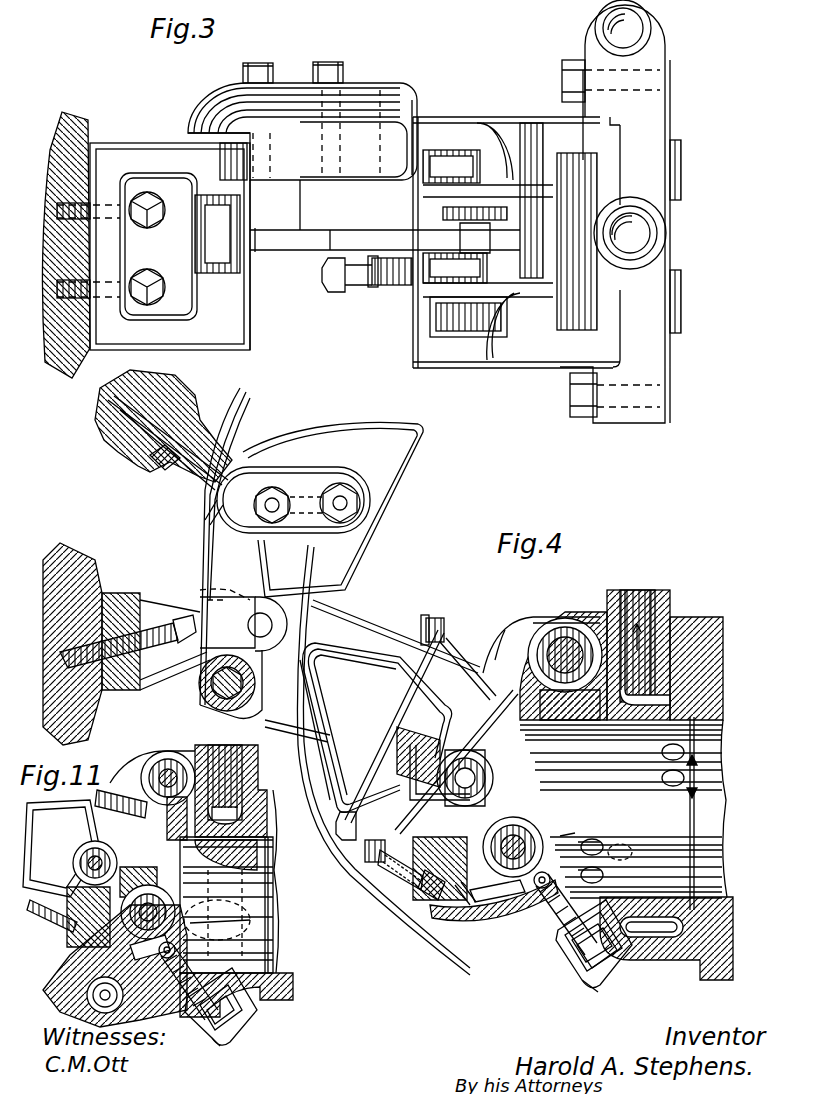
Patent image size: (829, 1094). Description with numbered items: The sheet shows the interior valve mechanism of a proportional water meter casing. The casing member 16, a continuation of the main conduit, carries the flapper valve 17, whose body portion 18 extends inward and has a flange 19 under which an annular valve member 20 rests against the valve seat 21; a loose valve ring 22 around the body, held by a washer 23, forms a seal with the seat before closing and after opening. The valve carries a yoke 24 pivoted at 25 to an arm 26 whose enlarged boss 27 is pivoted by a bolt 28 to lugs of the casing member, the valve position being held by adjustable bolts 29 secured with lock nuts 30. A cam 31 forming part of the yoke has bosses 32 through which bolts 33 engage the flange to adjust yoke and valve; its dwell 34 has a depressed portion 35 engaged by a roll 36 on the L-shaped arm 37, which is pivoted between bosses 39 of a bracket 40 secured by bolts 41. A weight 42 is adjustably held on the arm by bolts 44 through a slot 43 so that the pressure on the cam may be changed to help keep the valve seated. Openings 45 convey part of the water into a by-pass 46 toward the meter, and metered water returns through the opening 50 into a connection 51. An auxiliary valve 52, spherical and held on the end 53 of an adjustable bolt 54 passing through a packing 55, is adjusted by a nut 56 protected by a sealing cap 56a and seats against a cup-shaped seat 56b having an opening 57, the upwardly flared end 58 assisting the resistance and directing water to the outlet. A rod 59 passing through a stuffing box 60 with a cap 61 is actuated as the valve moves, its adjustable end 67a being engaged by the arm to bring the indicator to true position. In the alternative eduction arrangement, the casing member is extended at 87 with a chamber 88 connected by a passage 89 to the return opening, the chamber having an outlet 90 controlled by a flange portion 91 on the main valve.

In FIG. 3, the casing member 16 is at (665, 128).
In FIG. 4, the casing member 16 is at (633, 955).
In FIG. 4, the flapper valve 17 is at (410, 905).
In FIG. 4, the body portion 18 is at (481, 778).
In FIG. 4, the flange 19 is at (430, 905).
In FIG. 4, the annular valve member 20 is at (457, 920).
In FIG. 4, the valve seat 21 is at (450, 905).
In FIG. 4, the valve ring 22 is at (480, 905).
In FIG. 4, the washer or ring 23 is at (560, 757).
In FIG. 3, the yoke 24 is at (435, 362).
In FIG. 4, the yoke 24 is at (425, 735).
In FIG. 4, the pivot 25 is at (400, 762).
In FIG. 4, the arm 26 is at (335, 805).
In FIG. 11, the arm 26 is at (244, 791).
In FIG. 3, the enlarged boss 27 is at (548, 160).
In FIG. 4, the enlarged boss 27 is at (545, 620).
In FIG. 4, the bolt or rod 28 is at (592, 620).
In FIG. 4, the bolts 29 is at (505, 630).
In FIG. 4, the lock nuts 30 is at (462, 650).
In FIG. 4, the cam 31 is at (313, 845).
In FIG. 11, the cam 31 is at (210, 800).
In FIG. 3, the bosses 32 is at (372, 285).
In FIG. 4, the bosses 32 is at (433, 618).
In FIG. 3, the bolts 33 is at (332, 292).
In FIG. 4, the bolts 33 is at (345, 838).
In FIG. 4, the dwell 34 is at (280, 736).
In FIG. 4, the depressed portion 35 is at (292, 625).
In FIG. 3, the roll 36 is at (272, 270).
In FIG. 4, the roll 36 is at (212, 560).
In FIG. 3, the pivotally held arm 37 is at (298, 195).
In FIG. 4, the pivotally held arm 37 is at (225, 590).
In FIG. 3, the lugs or bosses 39 is at (250, 330).
In FIG. 3, the bracket 40 is at (195, 340).
In FIG. 4, the bracket 40 is at (147, 687).
In FIG. 3, the bolts 41 is at (150, 272).
In FIG. 4, the bolts 41 is at (108, 598).
In FIG. 3, the weight 42 is at (408, 92).
In FIG. 4, the weight 42 is at (405, 462).
In FIG. 4, the slot 43 is at (300, 500).
In FIG. 3, the bolts 44 is at (335, 64).
In FIG. 4, the bolts 44 is at (368, 517).
In FIG. 4, the openings 45 is at (685, 780).
In FIG. 3, the by-pass 46 is at (640, 237).
In FIG. 4, the by-pass 46 is at (655, 610).
In FIG. 3, the by-pass or opening 50 is at (642, 30).
In FIG. 4, the connection 51 is at (615, 955).
In FIG. 4, the auxiliary valve 52 is at (573, 840).
In FIG. 4, the end 53 is at (538, 888).
In FIG. 4, the bolt or stem 54 is at (572, 965).
In FIG. 4, the packing 55 is at (545, 915).
In FIG. 4, the nut 56 is at (590, 985).
In FIG. 11, the nut 56 is at (240, 1037).
In FIG. 4, the sealing cap 56a is at (597, 992).
In FIG. 11, the sealing cap 56a is at (215, 1047).
In FIG. 4, the valve seat 56b is at (572, 819).
In FIG. 4, the opening 57 is at (410, 790).
In FIG. 4, the upwardly flared end 58 is at (480, 930).
In FIG. 4, the rod or stem 59 is at (98, 430).
In FIG. 4, the stuffing box 60 is at (108, 455).
In FIG. 4, the cap 61 is at (142, 470).
In FIG. 4, the adjustable end or cap 67a is at (241, 540).
In FIG. 11, the casing member extension 87 is at (193, 975).
In FIG. 11, the chamber 88 is at (63, 1003).
In FIG. 11, the passage 89 is at (187, 930).
In FIG. 11, the outlet 90 is at (67, 957).
In FIG. 11, the flange portion 91 is at (60, 973).